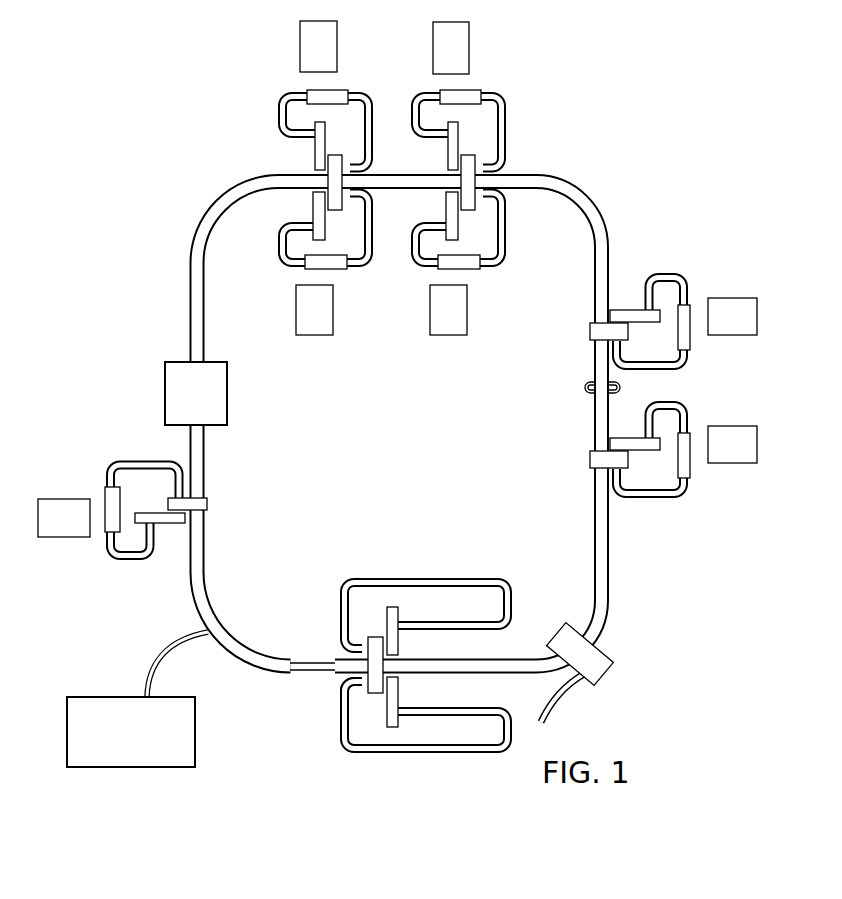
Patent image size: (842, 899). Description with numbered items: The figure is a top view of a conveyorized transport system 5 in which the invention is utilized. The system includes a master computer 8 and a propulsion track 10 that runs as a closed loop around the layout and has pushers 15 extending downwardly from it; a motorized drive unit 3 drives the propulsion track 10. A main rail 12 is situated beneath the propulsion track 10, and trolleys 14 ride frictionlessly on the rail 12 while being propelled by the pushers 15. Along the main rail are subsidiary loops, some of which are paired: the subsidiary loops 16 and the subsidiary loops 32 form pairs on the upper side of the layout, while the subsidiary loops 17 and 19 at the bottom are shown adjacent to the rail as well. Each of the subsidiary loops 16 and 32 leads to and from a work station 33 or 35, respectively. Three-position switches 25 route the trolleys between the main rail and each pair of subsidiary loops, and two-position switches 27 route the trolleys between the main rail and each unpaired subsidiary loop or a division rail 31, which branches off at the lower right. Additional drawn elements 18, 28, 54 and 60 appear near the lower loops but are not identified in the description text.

The motorized drive unit 3 is at (227, 381).
The conveyorized transport system 5 is at (430, 354).
The master computer 8 is at (195, 738).
The propulsion track 10 is at (600, 427).
The main rail 12 is at (312, 673).
The trolleys 14 is at (590, 393).
The pushers 15 is at (590, 385).
The subsidiary loops 16 is at (357, 85).
The subsidiary loop 17 is at (455, 578).
The switch 18 is at (371, 650).
The subsidiary loop 19 is at (447, 756).
The three-position switches 25 is at (306, 160).
The two-position switches 27 is at (624, 302).
The loop track section 28 is at (341, 727).
The division rail 31 is at (562, 698).
The subsidiary loops 32 is at (362, 272).
The work station 33 is at (468, 36).
The work station 35 is at (316, 337).
The switch bar 54 is at (399, 697).
The switch bar 60 is at (399, 640).